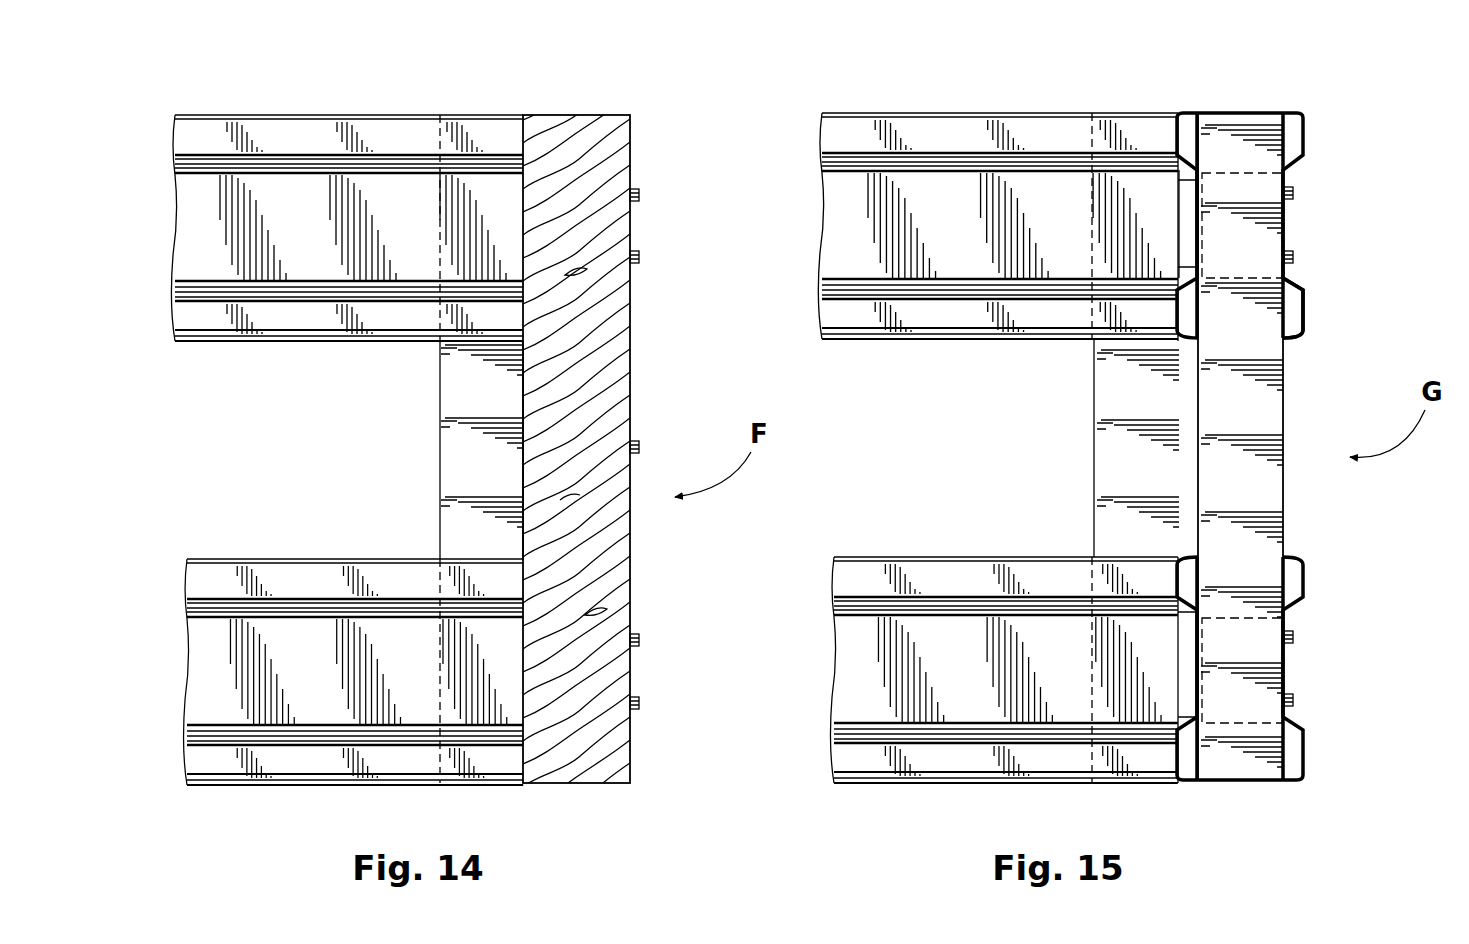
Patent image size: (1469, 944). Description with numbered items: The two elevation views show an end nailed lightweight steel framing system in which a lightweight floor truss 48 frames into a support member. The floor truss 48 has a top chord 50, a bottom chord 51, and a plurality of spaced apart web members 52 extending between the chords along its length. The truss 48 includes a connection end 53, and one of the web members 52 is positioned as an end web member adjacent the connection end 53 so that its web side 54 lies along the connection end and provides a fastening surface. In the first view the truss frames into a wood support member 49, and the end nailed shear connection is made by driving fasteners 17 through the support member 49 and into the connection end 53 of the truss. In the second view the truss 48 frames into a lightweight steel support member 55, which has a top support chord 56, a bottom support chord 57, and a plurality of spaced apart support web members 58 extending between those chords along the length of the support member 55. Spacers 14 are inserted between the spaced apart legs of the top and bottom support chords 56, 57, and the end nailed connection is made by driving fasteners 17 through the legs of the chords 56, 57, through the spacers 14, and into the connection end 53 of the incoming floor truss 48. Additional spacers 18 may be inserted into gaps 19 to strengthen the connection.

In FIG. 14, the lightweight floor truss 48 is at (173, 90).
In FIG. 15, the lightweight floor truss 48 is at (823, 98).
In FIG. 14, the support member 49 is at (557, 165).
In FIG. 14, the top chord 50 is at (195, 228).
In FIG. 15, the top chord 50 is at (845, 228).
In FIG. 14, the bottom chord 51 is at (207, 668).
In FIG. 15, the bottom chord 51 is at (858, 668).
In FIG. 14, the web members 52 is at (453, 413).
In FIG. 15, the web members 52 is at (1103, 416).
In FIG. 14, the connection end 53 is at (527, 402).
In FIG. 15, the connection end 53 is at (1185, 372).
In FIG. 14, the web side 54 is at (523, 478).
In FIG. 15, the web side 54 is at (1177, 537).
In FIG. 14, the fasteners 17 is at (641, 197).
In FIG. 15, the fasteners 17 is at (1296, 193).
In FIG. 15, the additional spacers 18 is at (1185, 203).
In FIG. 15, the gaps 19 is at (1188, 168).
In FIG. 15, the spacers 14 is at (1240, 173).
In FIG. 15, the lightweight steel support member 55 is at (1326, 175).
In FIG. 15, the top support chord 56 is at (1303, 321).
In FIG. 15, the bottom support chord 57 is at (1306, 581).
In FIG. 15, the support web members 58 is at (1272, 403).